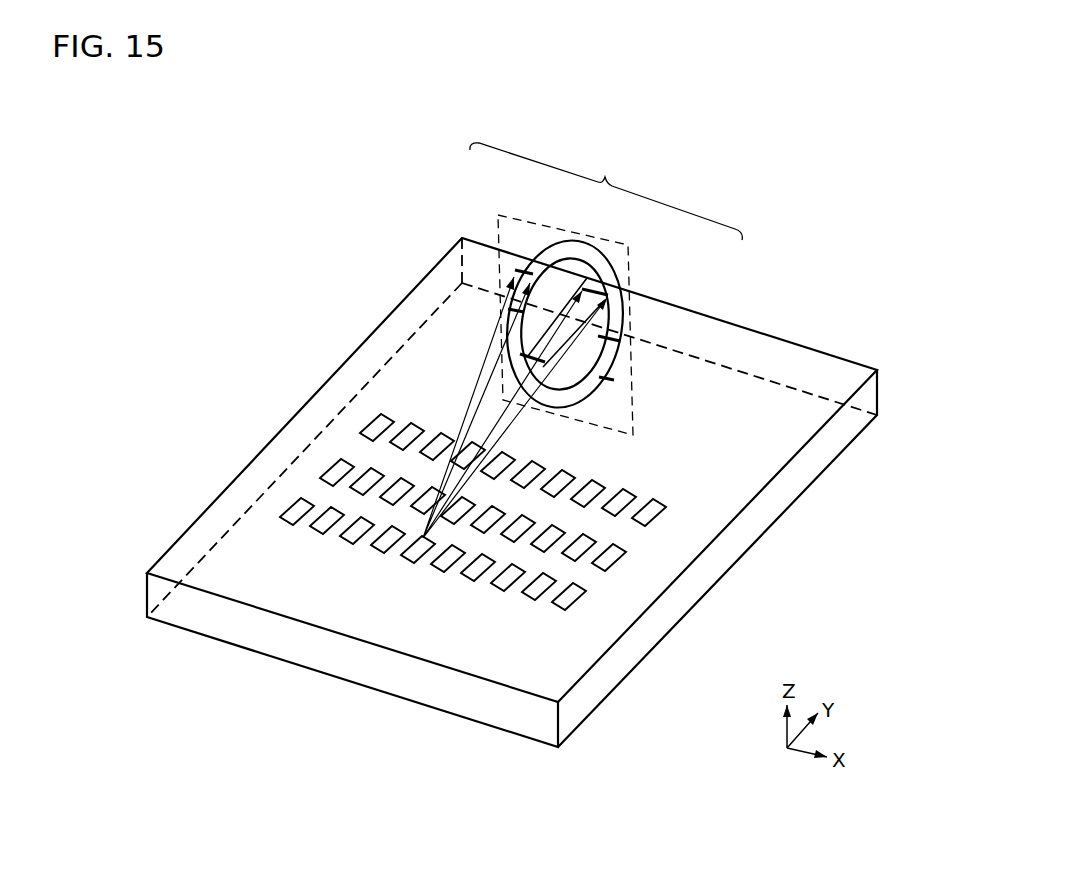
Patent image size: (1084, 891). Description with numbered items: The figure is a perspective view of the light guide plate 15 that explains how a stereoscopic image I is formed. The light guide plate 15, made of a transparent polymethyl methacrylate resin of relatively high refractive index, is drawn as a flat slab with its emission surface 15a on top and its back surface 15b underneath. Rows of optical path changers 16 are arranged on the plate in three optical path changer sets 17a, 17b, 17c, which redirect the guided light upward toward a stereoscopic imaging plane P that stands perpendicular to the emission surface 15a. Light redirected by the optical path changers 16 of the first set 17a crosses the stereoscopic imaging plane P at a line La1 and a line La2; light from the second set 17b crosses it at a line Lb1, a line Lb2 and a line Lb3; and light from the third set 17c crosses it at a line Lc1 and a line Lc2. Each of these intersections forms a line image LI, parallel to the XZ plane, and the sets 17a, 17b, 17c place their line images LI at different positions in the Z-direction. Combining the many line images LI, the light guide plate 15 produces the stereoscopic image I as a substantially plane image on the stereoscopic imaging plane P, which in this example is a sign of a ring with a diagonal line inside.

The light guide plate 15 is at (214, 504).
The emission surface 15a is at (240, 558).
The back surface 15b is at (238, 647).
The optical path changer 16 is at (516, 495).
The optical path changer set 17a is at (585, 600).
The optical path changer set 17b is at (622, 560).
The optical path changer set 17c is at (662, 520).
The stereoscopic image I is at (613, 389).
The stereoscopic imaging plane P is at (634, 428).
The line image LI is at (606, 191).
The line Lb1 is at (524, 352).
The line La1 is at (517, 272).
The line Lc1 is at (531, 280).
The line Lb2 is at (581, 289).
The line La2 is at (588, 306).
The line Lb3 is at (612, 337).
The line Lc2 is at (613, 378).